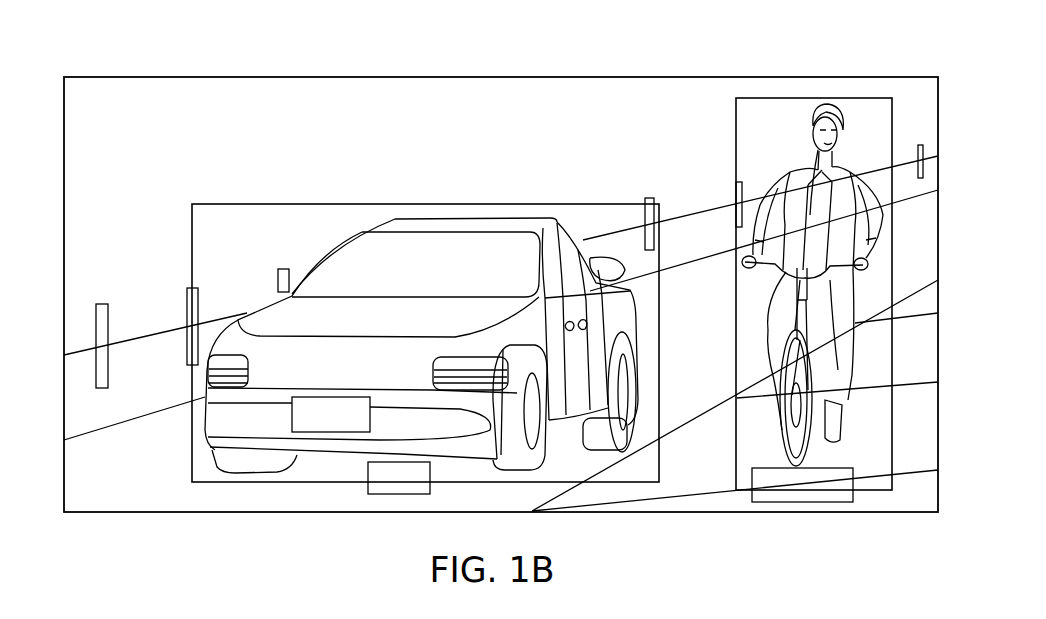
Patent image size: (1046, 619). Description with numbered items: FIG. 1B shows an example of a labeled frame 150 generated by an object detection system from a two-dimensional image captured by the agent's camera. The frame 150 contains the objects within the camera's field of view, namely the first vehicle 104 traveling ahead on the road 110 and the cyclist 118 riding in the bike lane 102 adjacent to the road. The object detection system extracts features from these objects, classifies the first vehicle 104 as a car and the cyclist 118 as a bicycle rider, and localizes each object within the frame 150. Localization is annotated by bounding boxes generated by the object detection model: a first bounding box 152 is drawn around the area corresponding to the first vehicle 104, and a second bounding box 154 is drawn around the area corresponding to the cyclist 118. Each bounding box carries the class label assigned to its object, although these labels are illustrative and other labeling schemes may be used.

The first frame 150 is at (661, 77).
The first bounding box 152 is at (534, 205).
The second bounding box 154 is at (735, 120).
The first vehicle 104 is at (466, 213).
The cyclist 118 is at (783, 178).
The road 110 is at (687, 352).
The bike lane 102 is at (722, 490).